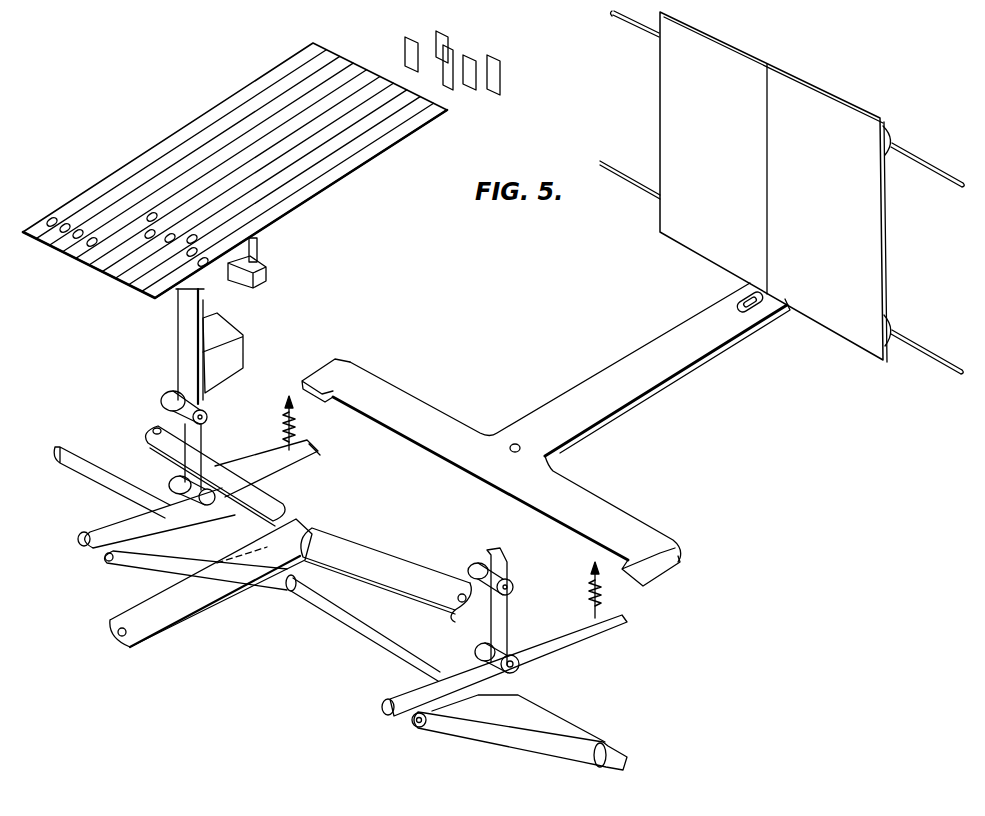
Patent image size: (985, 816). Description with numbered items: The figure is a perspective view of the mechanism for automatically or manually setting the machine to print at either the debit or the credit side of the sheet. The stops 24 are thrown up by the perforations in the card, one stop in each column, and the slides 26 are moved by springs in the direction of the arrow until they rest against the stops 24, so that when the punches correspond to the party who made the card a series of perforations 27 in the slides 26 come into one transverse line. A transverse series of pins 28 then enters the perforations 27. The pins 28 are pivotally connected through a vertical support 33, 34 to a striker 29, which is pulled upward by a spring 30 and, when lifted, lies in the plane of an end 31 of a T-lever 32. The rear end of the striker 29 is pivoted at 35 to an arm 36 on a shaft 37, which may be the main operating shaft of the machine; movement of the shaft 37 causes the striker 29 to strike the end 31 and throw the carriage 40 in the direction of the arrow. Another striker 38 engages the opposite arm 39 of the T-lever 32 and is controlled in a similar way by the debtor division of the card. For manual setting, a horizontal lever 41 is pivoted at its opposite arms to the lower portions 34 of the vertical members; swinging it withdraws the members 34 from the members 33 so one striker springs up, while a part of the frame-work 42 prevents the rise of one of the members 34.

The stops 24 is at (490, 90).
The slides 26 is at (376, 148).
The perforations 27 is at (204, 270).
The pins 28 is at (258, 249).
The striker 29 is at (305, 460).
The spring 30 is at (275, 423).
The end of T-lever 31 is at (326, 380).
The T-lever 32 is at (546, 441).
The vertical support 33 is at (189, 337).
The lower portion of vertical member 34 is at (190, 470).
The pivot 35 is at (112, 563).
The arm 36 is at (250, 588).
The shaft 37 is at (416, 653).
The striker 38 is at (507, 666).
The opposite arm of T-lever 39 is at (650, 572).
The carriage 40 is at (693, 248).
The horizontal lever 41 is at (284, 535).
The frame-work 42 is at (223, 353).